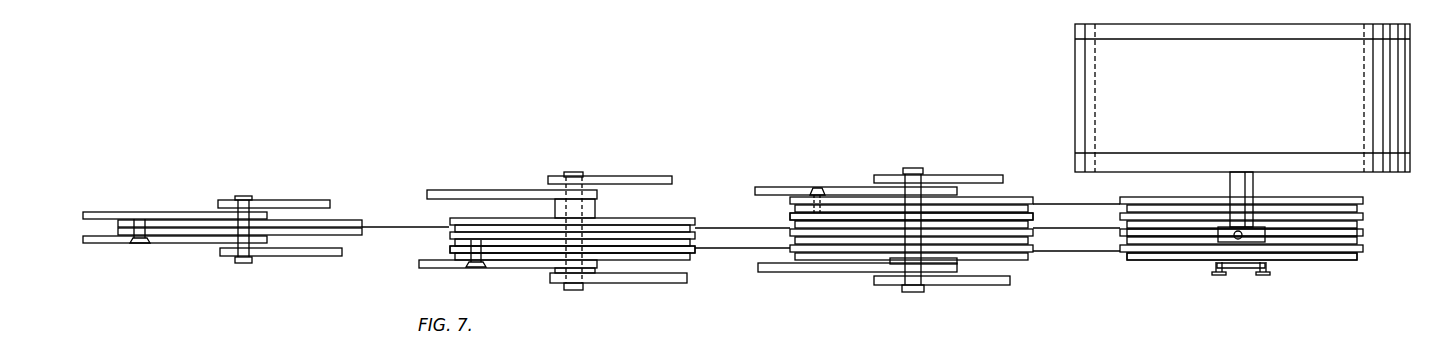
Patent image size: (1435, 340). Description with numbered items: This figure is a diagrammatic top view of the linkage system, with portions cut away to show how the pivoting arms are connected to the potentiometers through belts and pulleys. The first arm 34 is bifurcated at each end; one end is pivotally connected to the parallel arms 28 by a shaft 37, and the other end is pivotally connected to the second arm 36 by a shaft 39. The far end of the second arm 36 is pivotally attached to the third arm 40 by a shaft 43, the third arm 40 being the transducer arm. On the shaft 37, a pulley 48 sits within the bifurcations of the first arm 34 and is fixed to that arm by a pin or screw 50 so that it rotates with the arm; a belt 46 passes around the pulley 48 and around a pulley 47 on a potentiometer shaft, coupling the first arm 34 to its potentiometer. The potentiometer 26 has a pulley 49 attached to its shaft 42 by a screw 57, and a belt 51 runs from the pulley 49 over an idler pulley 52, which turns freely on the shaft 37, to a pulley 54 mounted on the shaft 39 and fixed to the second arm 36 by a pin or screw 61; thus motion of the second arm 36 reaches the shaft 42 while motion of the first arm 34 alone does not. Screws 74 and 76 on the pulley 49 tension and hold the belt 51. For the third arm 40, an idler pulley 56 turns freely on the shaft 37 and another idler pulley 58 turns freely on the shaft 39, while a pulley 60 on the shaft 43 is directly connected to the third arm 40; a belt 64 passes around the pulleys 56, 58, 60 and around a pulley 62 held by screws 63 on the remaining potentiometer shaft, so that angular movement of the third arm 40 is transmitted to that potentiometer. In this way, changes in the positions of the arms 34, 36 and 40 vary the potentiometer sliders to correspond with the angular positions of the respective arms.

The potentiometer 26 is at (1242, 98).
The arms 28 is at (975, 176).
The first arm 34 is at (647, 177).
The second arm 36 is at (285, 201).
The shaft 37 is at (917, 169).
The shaft 39 is at (573, 172).
The third arm 40 is at (83, 239).
The shaft 42 is at (1253, 172).
The shaft 43 is at (243, 196).
The belt 46 is at (1057, 193).
The pulley 47 is at (1343, 198).
The pulley 48 is at (848, 198).
The pulley 49 is at (1327, 261).
The pin or screw 50 is at (817, 188).
The belt 51 is at (723, 249).
The idler pulley 52 is at (820, 259).
The pulley 54 is at (647, 256).
The idler pulley 56 is at (790, 222).
The screw 57 is at (1237, 238).
The idler pulley 58 is at (637, 218).
The pulley 60 is at (348, 219).
The pin or screw 61 is at (475, 268).
The pulley 62 is at (1357, 232).
The screws 63 is at (137, 245).
The belt 64 is at (387, 229).
The screw 74 is at (1219, 277).
The screw 76 is at (1262, 278).